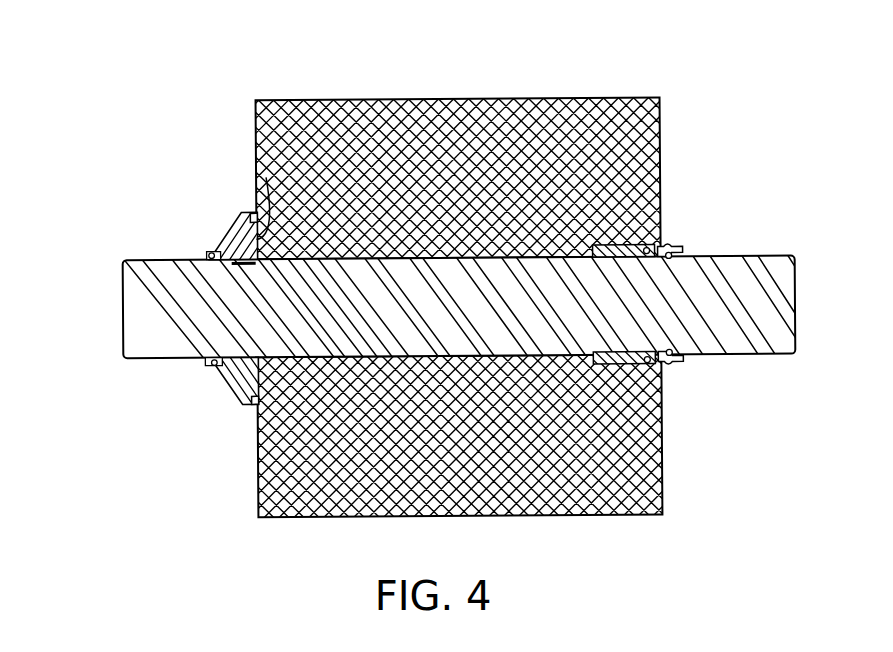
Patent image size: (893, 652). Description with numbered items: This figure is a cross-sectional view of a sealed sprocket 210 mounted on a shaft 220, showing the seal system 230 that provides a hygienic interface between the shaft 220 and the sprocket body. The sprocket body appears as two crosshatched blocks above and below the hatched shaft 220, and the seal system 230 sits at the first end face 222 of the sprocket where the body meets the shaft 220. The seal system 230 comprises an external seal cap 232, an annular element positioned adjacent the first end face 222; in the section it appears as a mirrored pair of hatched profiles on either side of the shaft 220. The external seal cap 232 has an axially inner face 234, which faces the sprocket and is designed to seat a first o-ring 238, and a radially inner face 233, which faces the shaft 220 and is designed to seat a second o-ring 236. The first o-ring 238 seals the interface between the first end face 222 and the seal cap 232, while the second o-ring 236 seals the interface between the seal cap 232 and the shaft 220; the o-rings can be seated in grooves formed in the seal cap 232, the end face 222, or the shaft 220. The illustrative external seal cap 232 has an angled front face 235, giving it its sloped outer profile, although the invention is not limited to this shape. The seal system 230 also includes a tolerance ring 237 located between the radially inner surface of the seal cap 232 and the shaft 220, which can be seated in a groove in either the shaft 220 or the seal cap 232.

The sealed sprocket 210 is at (302, 107).
The shaft 220 is at (123, 303).
The first end face 222 is at (258, 497).
The seal system 230 is at (159, 160).
The external seal cap 232 is at (194, 425).
The radially inner face 233 is at (222, 358).
The axially inner face 234 is at (254, 210).
The angled front face 235 is at (230, 226).
The second o-ring 236 is at (209, 254).
The tolerance ring 237 is at (233, 385).
The first o-ring 238 is at (252, 210).